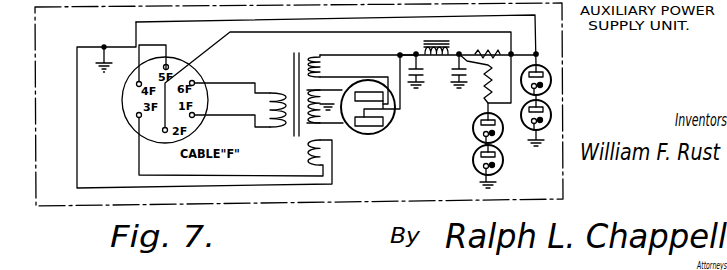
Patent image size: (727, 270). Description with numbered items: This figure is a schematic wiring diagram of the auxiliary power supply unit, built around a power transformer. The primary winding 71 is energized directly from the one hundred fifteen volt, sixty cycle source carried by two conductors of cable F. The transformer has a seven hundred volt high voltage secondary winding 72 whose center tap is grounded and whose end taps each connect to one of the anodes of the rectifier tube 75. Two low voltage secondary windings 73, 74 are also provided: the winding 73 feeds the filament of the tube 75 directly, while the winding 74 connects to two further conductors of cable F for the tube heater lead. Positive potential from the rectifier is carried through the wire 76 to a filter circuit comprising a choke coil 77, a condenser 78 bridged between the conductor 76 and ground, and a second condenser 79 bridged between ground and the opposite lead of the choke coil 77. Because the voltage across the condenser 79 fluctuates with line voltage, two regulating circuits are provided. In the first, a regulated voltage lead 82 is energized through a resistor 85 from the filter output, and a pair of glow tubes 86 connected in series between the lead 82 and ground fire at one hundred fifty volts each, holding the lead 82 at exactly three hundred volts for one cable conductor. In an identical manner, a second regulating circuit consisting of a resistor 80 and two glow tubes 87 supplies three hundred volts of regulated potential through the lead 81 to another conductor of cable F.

The primary winding 71 is at (241, 105).
The high voltage secondary winding 72 is at (325, 106).
The low voltage secondary winding 73 is at (354, 79).
The low voltage secondary winding 74 is at (321, 156).
The rectifier tube 75 is at (372, 134).
The wire 76 is at (409, 54).
The choke coil 77 is at (436, 57).
The condenser 78 is at (424, 74).
The condenser 79 is at (468, 73).
The resistor 80 is at (482, 94).
The lead 81 is at (213, 46).
The regulated voltage lead 82 is at (163, 22).
The resistor 85 is at (487, 46).
The glow tubes 86 is at (566, 115).
The glow tubes 87 is at (474, 152).